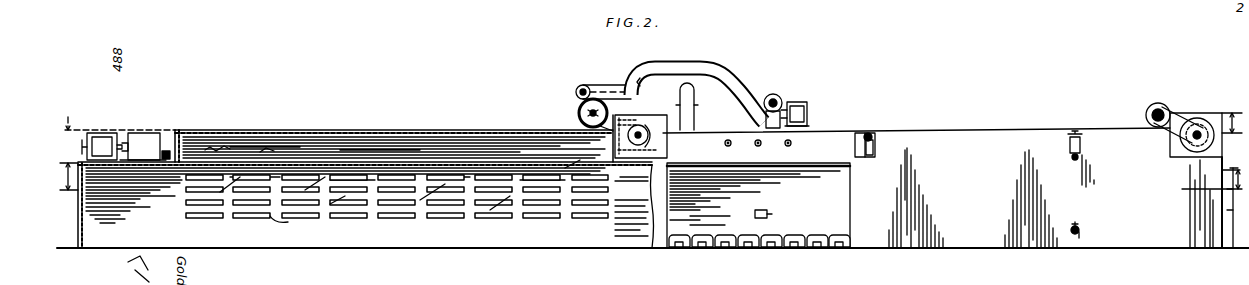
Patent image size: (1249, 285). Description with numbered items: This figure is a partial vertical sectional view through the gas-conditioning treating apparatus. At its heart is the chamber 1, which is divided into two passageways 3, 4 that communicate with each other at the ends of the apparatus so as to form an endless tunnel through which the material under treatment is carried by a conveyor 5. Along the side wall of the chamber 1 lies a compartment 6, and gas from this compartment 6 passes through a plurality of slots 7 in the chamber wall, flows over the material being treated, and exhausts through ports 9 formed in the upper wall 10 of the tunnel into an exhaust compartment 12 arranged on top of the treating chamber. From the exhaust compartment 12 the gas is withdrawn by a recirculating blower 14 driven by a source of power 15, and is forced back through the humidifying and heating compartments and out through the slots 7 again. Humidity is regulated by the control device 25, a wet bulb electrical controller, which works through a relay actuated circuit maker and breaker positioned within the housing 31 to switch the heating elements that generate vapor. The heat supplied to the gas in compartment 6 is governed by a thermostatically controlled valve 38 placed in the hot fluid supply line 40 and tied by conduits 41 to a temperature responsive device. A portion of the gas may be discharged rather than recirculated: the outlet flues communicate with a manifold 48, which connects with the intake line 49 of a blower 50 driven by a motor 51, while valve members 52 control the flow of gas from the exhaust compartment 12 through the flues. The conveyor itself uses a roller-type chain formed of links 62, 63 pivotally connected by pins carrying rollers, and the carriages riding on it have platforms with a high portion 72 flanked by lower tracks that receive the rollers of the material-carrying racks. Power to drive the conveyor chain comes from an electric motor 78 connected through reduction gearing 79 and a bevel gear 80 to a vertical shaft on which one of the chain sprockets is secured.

The chamber 1 is at (342, 193).
The passageway 3 is at (119, 115).
The passageway 4 is at (651, 173).
The conveyor 5 is at (1232, 115).
The compartment 6 is at (276, 248).
The slots 7 is at (540, 214).
The ports 9 is at (395, 160).
The upper wall 10 is at (443, 160).
The exhaust compartment 12 is at (326, 130).
The recirculating blower 14 is at (668, 143).
The source of power 15 is at (580, 89).
The control device 25 is at (873, 137).
The housing 31 is at (876, 150).
The thermostatically controlled valve 38 is at (1082, 148).
The hot fluid supply line 40 is at (1074, 161).
The conduits 41 is at (1068, 141).
The manifold 48 is at (696, 118).
The intake line 49 is at (608, 90).
The blower 50 is at (776, 94).
The motor 51 is at (806, 106).
The valve members 52 is at (577, 106).
The links 62 is at (672, 215).
The links 63 is at (775, 214).
The high portion 72 is at (838, 236).
The electric motor 78 is at (106, 141).
The reduction gearing 79 is at (149, 139).
The bevel gear 80 is at (168, 150).